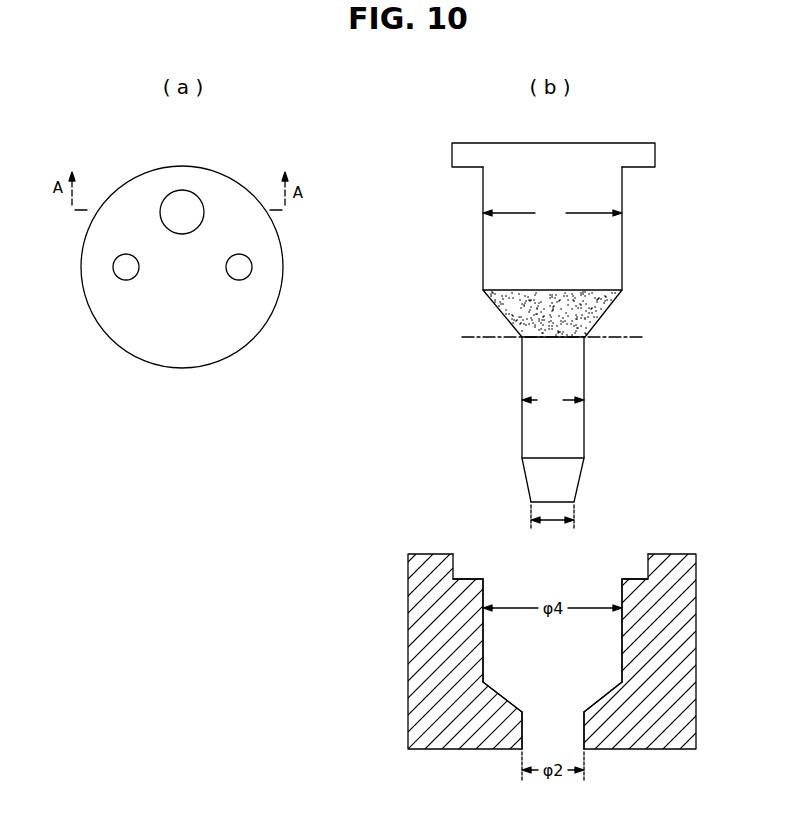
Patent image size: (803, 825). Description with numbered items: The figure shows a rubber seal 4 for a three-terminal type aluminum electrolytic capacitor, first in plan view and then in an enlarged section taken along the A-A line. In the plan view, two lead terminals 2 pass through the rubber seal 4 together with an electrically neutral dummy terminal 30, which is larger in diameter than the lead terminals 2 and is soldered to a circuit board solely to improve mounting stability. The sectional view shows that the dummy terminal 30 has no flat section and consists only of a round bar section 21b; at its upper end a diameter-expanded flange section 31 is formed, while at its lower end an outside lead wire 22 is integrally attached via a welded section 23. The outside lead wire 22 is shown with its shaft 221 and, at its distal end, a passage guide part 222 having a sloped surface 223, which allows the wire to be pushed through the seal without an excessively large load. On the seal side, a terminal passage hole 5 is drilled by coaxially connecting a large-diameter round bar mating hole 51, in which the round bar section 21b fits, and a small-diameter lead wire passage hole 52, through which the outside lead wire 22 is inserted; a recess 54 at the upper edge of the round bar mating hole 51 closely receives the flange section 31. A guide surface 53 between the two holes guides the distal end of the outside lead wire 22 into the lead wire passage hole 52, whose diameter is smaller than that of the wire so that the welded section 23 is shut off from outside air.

The lead terminal 2 is at (116, 276).
The rubber seal 4 is at (261, 347).
The terminal passage hole 5 is at (626, 664).
The round bar section 21b is at (622, 244).
The outside lead wire 22 is at (549, 440).
The welded section 23 is at (500, 314).
The dummy terminal 30 is at (182, 190).
The flange section 31 is at (452, 153).
The round bar mating hole 51 is at (622, 664).
The lead wire passage hole 52 is at (584, 727).
The guide surface 53 is at (508, 700).
The recess 54 is at (615, 553).
The pin shaft portion 221 is at (522, 379).
The passage guide part 222 is at (582, 483).
The sloped surface 223 is at (525, 483).